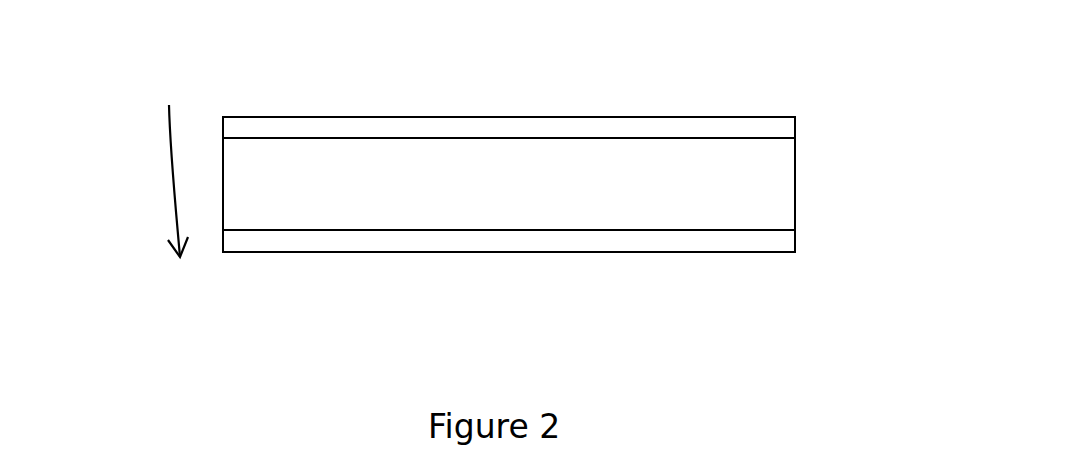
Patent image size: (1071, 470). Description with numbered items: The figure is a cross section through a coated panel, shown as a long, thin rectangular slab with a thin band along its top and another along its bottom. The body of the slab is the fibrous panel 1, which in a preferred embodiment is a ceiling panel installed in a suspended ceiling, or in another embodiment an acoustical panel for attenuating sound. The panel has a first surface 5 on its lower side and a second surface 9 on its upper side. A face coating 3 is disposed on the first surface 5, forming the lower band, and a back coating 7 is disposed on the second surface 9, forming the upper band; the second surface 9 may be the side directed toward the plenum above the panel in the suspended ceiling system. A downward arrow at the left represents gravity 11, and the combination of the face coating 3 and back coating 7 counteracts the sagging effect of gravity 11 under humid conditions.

The fibrous panel 1 is at (752, 189).
The face coating 3 is at (770, 243).
The first surface 5 is at (695, 230).
The back coating 7 is at (778, 132).
The second surface 9 is at (707, 138).
The gravity 11 is at (168, 168).